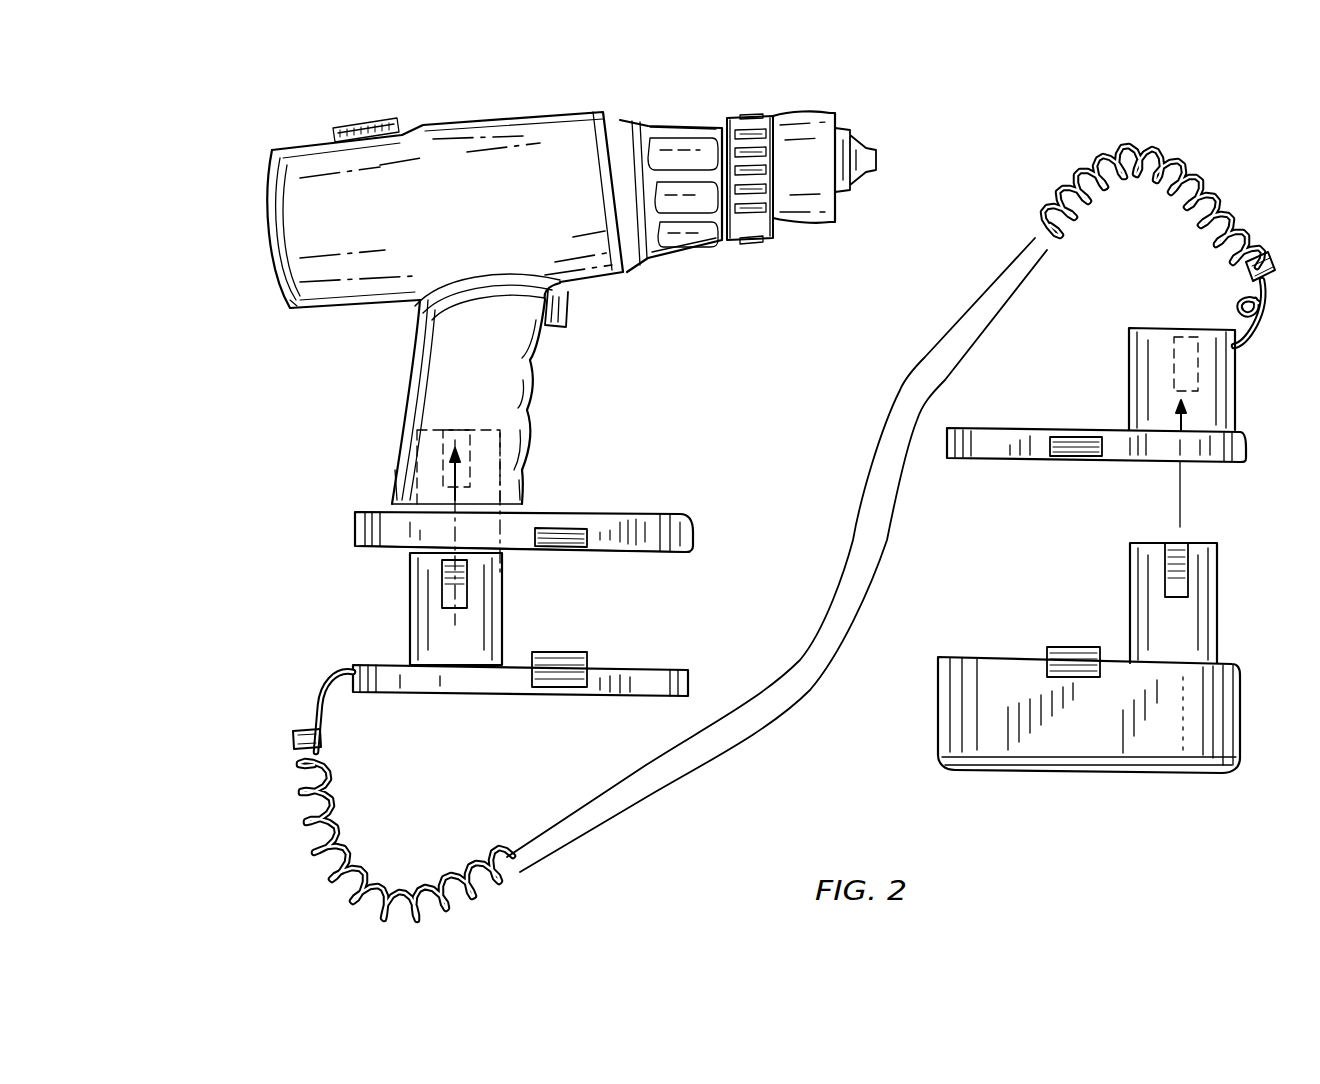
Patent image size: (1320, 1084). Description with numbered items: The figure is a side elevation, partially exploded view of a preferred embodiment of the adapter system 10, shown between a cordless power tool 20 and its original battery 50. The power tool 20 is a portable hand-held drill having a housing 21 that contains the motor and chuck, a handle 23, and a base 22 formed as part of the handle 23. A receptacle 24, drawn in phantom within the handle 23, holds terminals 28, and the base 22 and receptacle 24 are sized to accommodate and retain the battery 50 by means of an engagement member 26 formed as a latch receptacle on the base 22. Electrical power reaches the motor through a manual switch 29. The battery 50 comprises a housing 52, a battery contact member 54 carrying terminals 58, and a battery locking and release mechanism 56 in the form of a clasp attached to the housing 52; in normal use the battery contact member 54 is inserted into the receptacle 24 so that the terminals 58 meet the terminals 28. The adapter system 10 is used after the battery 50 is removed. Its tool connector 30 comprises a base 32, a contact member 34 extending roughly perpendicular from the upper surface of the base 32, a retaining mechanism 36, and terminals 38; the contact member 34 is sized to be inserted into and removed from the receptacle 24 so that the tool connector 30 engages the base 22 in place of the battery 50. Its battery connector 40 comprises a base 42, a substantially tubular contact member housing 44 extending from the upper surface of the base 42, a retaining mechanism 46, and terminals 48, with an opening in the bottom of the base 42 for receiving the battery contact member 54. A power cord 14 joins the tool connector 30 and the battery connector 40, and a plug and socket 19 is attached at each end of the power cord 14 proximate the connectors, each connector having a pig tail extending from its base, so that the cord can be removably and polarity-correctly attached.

The adapter system 10 is at (1238, 121).
The power cord 14 is at (500, 878).
The plug and socket 19 is at (292, 742).
The power tool 20 is at (291, 145).
The housing 21 is at (686, 125).
The base 22 is at (628, 512).
The handle 23 is at (438, 363).
The receptacle 24 is at (383, 463).
The engagement member 26 is at (572, 548).
The terminals 28 is at (467, 417).
The manual switch 29 is at (571, 300).
The tool connector 30 is at (534, 752).
The base 32 is at (445, 700).
The contact member 34 is at (410, 622).
The retaining mechanism 36 is at (585, 645).
The terminals 38 is at (460, 598).
The battery connector 40 is at (1030, 388).
The base 42 is at (1220, 462).
The contact member housing 44 is at (1128, 356).
The retaining mechanism 46 is at (1082, 456).
The terminals 48 is at (1184, 336).
The battery 50 is at (884, 738).
The housing 52 is at (1178, 753).
The battery contact member 54 is at (1216, 630).
The battery locking and release mechanism 56 is at (1055, 647).
The terminals 58 is at (1190, 555).